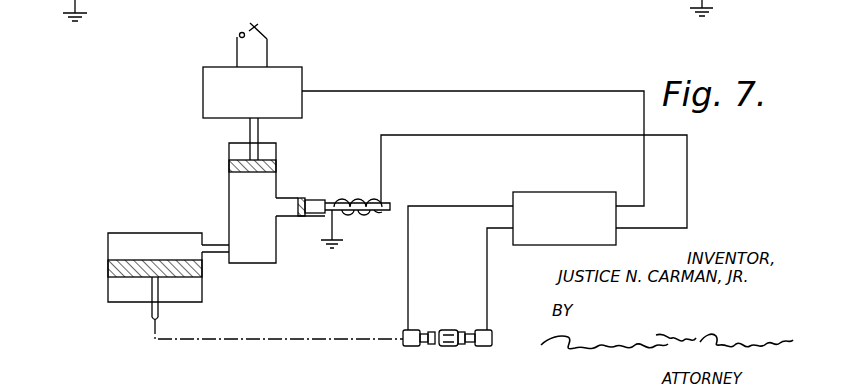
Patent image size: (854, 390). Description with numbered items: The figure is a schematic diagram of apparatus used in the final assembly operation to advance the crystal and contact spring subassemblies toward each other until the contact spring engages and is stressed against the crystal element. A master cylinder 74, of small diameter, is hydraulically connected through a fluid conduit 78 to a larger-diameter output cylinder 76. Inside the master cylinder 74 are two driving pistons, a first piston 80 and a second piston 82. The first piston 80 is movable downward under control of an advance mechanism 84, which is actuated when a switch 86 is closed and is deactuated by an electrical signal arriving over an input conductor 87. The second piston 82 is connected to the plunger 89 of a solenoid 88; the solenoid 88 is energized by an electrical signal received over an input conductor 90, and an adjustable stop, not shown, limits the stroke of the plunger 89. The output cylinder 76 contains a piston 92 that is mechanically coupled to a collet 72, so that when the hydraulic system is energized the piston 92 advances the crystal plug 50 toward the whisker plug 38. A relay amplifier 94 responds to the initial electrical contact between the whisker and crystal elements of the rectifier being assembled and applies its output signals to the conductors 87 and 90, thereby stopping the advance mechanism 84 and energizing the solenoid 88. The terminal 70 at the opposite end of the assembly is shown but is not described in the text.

The advance mechanism 84 is at (203, 92).
The switch 86 is at (270, 30).
The input conductor 87 is at (375, 90).
The input conductor 90 is at (468, 135).
The relay amplifier 94 is at (570, 192).
The master cylinder 74 is at (240, 213).
The piston 80 is at (229, 168).
The piston 82 is at (301, 198).
The plunger 89 is at (389, 202).
The solenoid 88 is at (355, 216).
The output cylinder 76 is at (112, 248).
The piston 92 is at (110, 267).
The fluid conduit 78 is at (213, 253).
The collet 72 is at (412, 348).
The crystal plug 50 is at (427, 326).
The whisker plug 38 is at (467, 331).
The terminal 70 is at (482, 348).